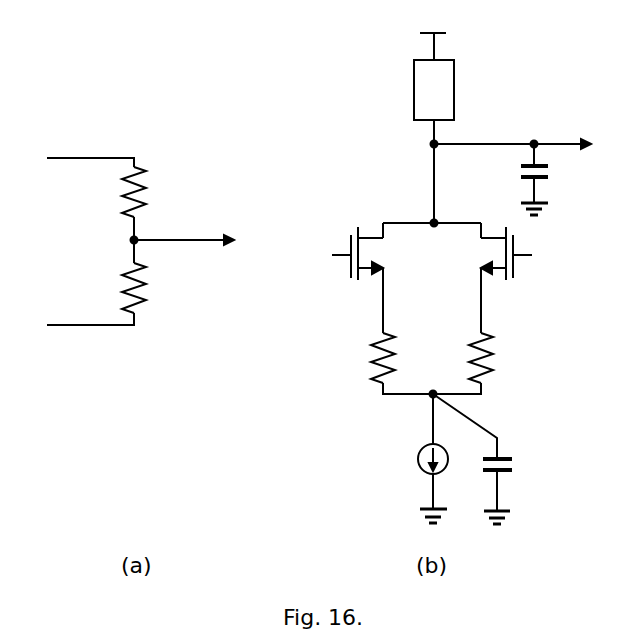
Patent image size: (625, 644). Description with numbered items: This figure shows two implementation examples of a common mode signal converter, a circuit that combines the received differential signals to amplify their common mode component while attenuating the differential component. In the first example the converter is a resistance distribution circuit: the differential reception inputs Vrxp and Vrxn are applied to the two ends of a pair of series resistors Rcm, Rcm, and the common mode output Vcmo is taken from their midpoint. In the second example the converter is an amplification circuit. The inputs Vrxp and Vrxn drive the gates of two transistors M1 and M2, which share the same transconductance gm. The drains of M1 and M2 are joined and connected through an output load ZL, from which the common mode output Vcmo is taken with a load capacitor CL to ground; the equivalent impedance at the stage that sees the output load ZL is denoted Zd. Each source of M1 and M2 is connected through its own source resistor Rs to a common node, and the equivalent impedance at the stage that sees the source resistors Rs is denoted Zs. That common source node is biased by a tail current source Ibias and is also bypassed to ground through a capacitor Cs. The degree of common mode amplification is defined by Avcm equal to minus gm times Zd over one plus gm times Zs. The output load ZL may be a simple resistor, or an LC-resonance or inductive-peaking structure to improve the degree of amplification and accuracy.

The common-mode sensing resistor Rcm is at (96, 241).
The source resistor Rs is at (431, 363).
The output load ZL is at (434, 88).
The load capacitor CL is at (552, 178).
The source capacitor Cs is at (488, 458).
The transistor M1 is at (406, 277).
The transistor M2 is at (493, 278).
The equivalent impedance Zd is at (414, 174).
The equivalent impedance Zs is at (347, 312).
The positive receive input Vrxp is at (69, 144).
The negative receive input Vrxn is at (69, 340).
The common-mode output voltage Vcmo is at (361, 176).
The tail current source Ibias is at (433, 458).